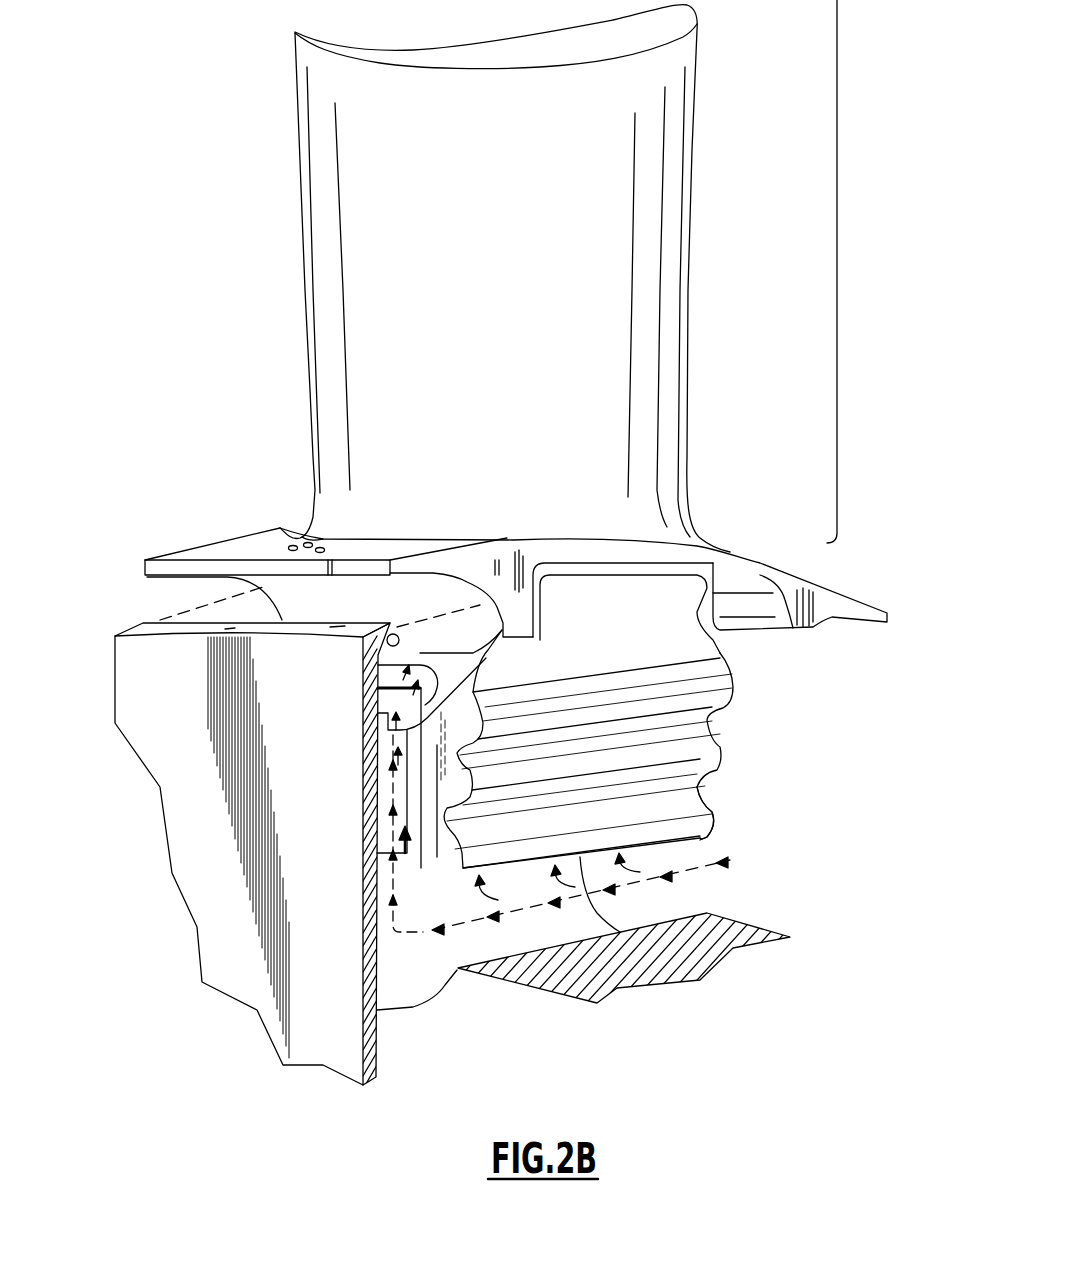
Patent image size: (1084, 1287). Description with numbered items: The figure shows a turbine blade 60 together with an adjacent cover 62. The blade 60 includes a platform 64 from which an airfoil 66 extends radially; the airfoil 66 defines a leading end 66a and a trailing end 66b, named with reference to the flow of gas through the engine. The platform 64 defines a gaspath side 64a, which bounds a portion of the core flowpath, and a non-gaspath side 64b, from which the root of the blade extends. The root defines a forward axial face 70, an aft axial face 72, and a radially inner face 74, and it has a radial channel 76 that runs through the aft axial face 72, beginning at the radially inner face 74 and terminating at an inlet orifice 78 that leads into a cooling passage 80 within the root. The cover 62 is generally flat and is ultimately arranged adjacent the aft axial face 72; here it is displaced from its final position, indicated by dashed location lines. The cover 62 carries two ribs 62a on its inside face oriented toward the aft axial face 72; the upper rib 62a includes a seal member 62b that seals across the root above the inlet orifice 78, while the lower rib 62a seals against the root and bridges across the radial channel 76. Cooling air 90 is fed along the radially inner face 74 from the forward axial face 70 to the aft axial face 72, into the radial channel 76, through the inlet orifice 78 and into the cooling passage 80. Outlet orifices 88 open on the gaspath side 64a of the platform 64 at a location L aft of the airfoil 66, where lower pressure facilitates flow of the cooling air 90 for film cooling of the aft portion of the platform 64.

The blade 60 is at (305, 420).
The airfoil 66 is at (839, 268).
The leading end 66a is at (700, 126).
The trailing end 66b is at (297, 250).
The platform 64 is at (869, 596).
The gaspath side 64a is at (227, 547).
The non-gaspath side 64b is at (225, 577).
The outlet orifices 88 is at (288, 547).
The location L is at (330, 523).
The cover 62 is at (150, 690).
The ribs 62a is at (494, 660).
The seal member 62b is at (399, 634).
The forward axial face 70 is at (727, 740).
The aft axial face 72 is at (437, 857).
The radially inner face 74 is at (703, 840).
The radial channel 76 is at (400, 858).
The inlet orifice 78 is at (390, 722).
The cooling passage 80 is at (380, 692).
The cooling air 90 is at (387, 800).